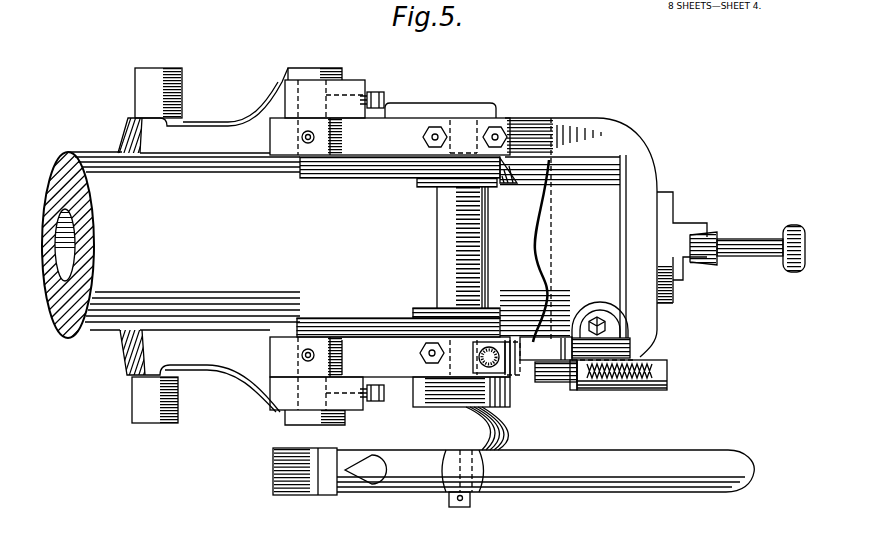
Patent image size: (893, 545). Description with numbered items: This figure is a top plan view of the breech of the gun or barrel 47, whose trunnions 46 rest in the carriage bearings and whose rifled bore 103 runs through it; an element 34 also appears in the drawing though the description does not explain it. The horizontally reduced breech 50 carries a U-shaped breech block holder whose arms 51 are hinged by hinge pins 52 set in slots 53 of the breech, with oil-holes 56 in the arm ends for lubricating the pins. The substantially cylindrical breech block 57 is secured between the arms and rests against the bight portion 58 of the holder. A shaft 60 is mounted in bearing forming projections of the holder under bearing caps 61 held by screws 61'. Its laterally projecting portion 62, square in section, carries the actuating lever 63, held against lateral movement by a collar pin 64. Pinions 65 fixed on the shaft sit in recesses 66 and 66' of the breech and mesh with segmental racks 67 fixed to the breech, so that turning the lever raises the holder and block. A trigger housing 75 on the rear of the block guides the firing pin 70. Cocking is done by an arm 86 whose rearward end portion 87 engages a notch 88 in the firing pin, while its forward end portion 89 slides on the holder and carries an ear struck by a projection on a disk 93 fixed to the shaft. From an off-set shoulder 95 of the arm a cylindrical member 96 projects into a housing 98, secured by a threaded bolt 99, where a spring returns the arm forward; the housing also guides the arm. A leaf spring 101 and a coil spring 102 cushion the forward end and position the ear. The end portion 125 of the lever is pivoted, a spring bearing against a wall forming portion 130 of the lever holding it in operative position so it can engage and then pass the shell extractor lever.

The coupling 34 is at (446, 446).
The trunnions 46 is at (182, 87).
The gun or barrel 47 is at (97, 338).
The breech 50 is at (534, 168).
The arms 51 is at (376, 131).
The hinge pins 52 is at (307, 72).
The slots 53 is at (268, 147).
The oil-holes 56 is at (308, 142).
The breech block 57 is at (614, 196).
The bight portion 58 is at (647, 193).
The shaft 60 is at (453, 235).
The bearing caps 61 is at (432, 260).
The screws 61' is at (466, 231).
The laterally projecting portion 62 is at (460, 505).
The actuating lever 63 is at (572, 478).
The collar pin 64 is at (457, 497).
The pinions 65 is at (447, 182).
The recess 66 is at (538, 250).
The recess 66' is at (501, 247).
The segmental racks 67 is at (378, 175).
The firing pin 70 is at (762, 257).
The trigger housing 75 is at (683, 272).
The cocking arm 86 is at (563, 360).
The rearward end portion 87 is at (699, 236).
The notch 88 is at (751, 243).
The forward end portion 89 is at (411, 392).
The disk 93 is at (494, 421).
The off-set portion or shoulder 95 is at (565, 375).
The cylindrical member 96 is at (572, 382).
The housing 98 is at (630, 389).
The threaded bolt 99 is at (597, 305).
The leaf spring 101 is at (512, 352).
The coil spring 102 is at (478, 388).
The bore 103 is at (70, 263).
The end portion 125 is at (318, 494).
The wall forming portion 130 is at (373, 483).